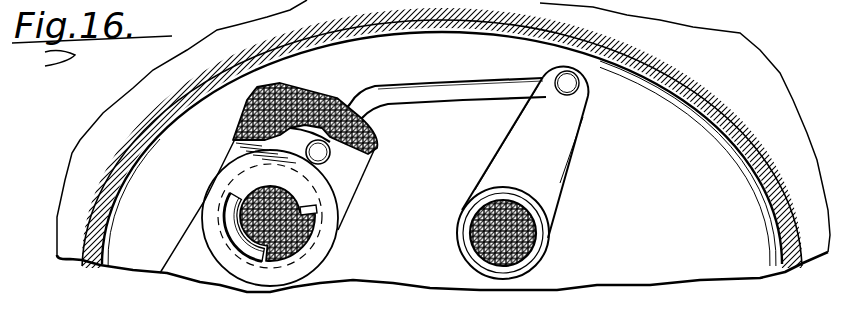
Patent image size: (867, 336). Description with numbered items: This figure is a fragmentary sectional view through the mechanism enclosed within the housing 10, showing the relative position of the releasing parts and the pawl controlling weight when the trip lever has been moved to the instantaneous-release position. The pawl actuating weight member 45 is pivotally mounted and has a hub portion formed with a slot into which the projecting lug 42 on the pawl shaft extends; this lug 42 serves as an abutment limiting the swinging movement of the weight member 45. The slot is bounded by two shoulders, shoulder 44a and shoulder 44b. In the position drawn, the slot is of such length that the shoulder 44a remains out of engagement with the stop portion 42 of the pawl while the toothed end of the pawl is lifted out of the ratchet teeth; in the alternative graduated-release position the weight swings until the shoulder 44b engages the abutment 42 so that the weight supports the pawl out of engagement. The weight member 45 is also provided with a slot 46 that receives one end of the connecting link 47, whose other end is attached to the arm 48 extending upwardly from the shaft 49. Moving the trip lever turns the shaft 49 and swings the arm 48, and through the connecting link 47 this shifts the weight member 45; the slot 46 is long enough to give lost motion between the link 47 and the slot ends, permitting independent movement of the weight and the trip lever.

The housing 10 is at (789, 273).
The projecting lug 42 is at (297, 253).
The shoulder 44a is at (313, 210).
The shoulder 44b is at (225, 222).
The weight member 45 is at (252, 111).
The slot 46 is at (237, 137).
The connecting link 47 is at (478, 103).
The arm 48 is at (568, 177).
The shaft 49 is at (530, 231).